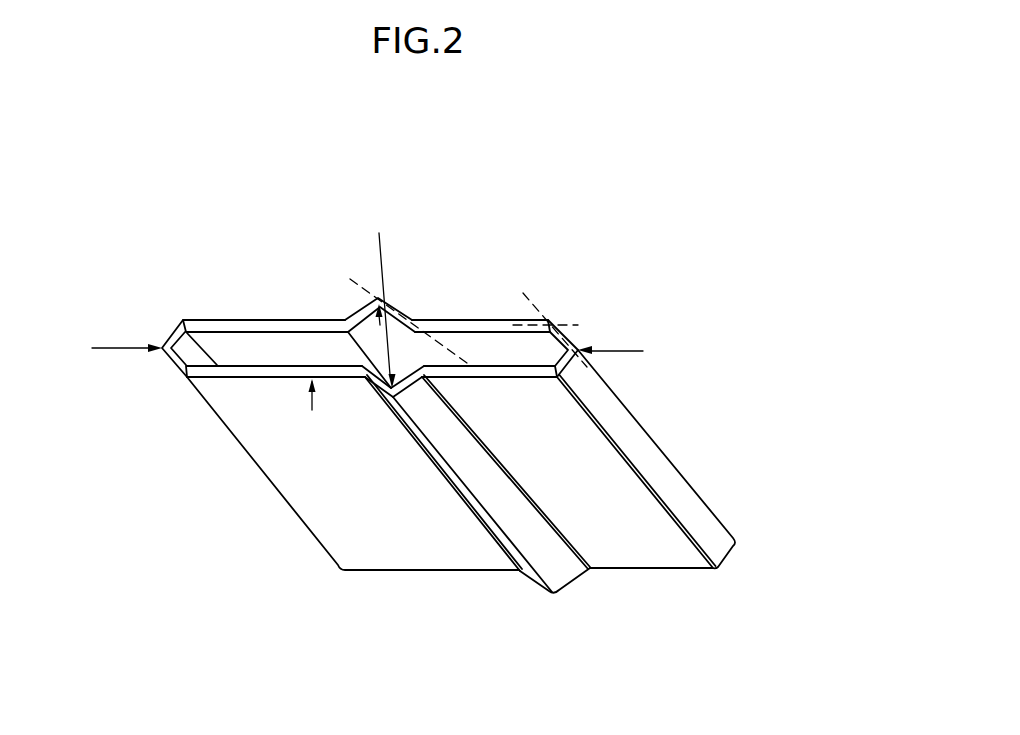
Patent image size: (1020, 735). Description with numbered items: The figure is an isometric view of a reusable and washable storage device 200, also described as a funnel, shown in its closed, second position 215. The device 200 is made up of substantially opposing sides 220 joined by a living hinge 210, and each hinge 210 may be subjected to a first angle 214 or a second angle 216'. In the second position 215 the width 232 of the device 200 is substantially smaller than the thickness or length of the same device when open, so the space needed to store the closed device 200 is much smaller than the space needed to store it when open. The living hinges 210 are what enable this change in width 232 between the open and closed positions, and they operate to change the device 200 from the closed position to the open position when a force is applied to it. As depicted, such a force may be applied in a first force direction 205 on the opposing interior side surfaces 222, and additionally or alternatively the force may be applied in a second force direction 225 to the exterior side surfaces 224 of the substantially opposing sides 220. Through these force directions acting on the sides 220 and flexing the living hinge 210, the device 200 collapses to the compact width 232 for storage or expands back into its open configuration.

The reusable and washable storage device 200 is at (257, 290).
The first force direction 205 is at (380, 325).
The living hinge 210 is at (398, 306).
The first angle 214 is at (442, 339).
The second position 215 is at (648, 395).
The second angle 216' is at (550, 309).
The substantially opposing sides 220 is at (497, 433).
The interior side surface 222 is at (413, 348).
The exterior side surface 224 is at (645, 437).
The second force direction 225 is at (110, 350).
The width 232 is at (307, 318).